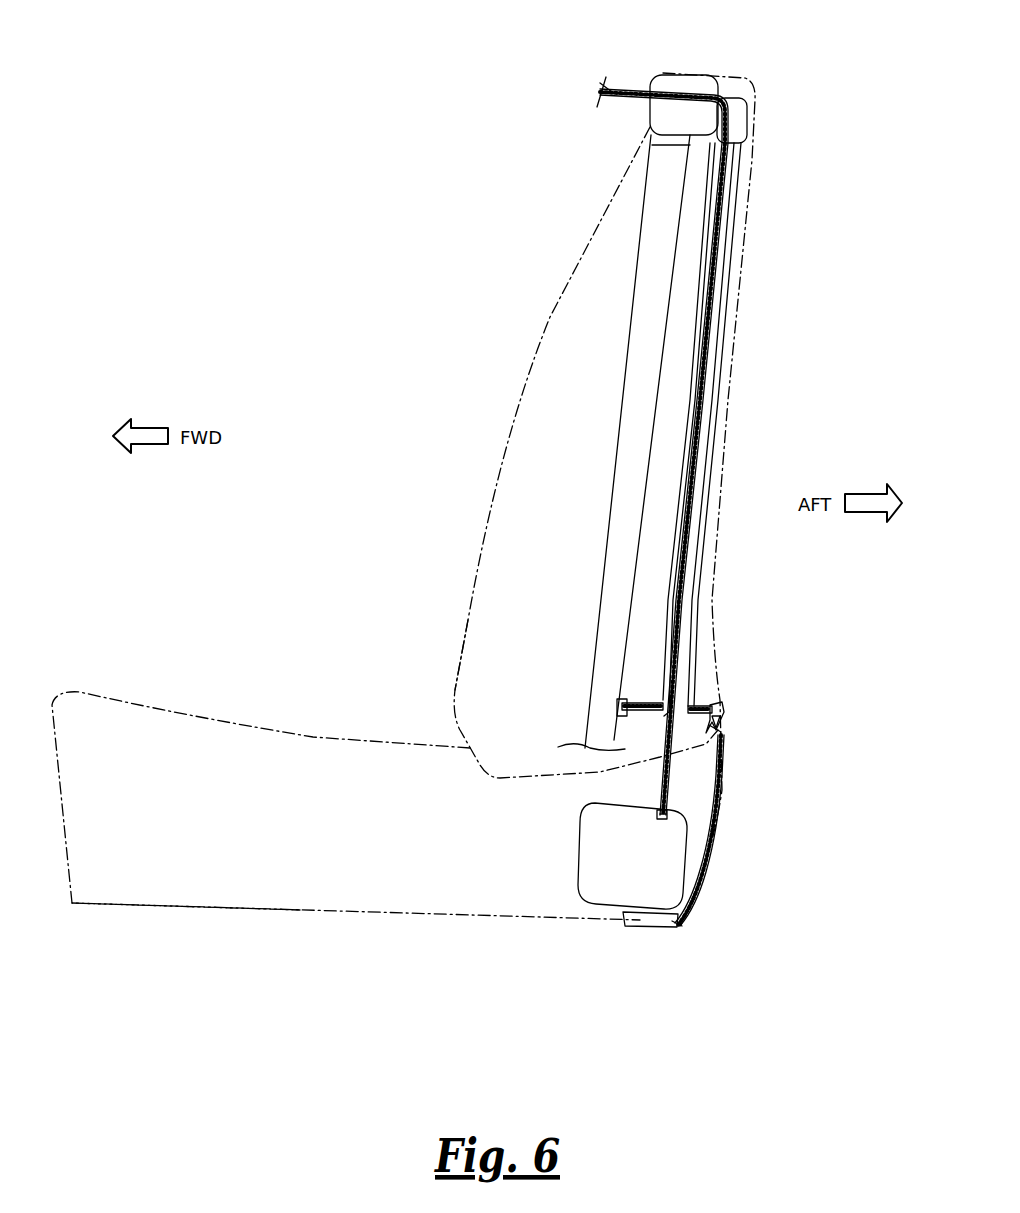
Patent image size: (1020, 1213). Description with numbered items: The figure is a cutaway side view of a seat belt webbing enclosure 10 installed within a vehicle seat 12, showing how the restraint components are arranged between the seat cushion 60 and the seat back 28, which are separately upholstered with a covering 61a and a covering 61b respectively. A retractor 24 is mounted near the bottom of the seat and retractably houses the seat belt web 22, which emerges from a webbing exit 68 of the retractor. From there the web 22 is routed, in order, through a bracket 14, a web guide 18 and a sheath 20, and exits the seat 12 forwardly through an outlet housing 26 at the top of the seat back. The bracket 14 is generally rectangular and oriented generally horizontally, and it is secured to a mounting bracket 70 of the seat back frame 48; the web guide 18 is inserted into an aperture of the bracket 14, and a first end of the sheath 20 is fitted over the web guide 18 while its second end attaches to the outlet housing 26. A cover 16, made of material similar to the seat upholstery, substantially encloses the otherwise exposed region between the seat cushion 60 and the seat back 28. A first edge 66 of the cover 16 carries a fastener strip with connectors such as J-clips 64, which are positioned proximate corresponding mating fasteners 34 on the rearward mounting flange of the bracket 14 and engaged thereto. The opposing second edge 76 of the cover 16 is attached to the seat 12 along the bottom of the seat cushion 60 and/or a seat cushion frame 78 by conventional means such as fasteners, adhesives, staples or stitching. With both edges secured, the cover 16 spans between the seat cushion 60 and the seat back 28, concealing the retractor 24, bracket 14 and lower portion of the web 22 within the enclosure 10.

The seat belt enclosure 10 is at (391, 237).
The vehicle seat 12 is at (378, 603).
The bracket 14 is at (640, 700).
The cover 16 is at (702, 868).
The web guide 18 is at (688, 698).
The sheath 20 is at (693, 627).
The seat belt web 22 is at (660, 802).
The retractor 24 is at (578, 866).
The outlet housing 26 is at (652, 85).
The seat back 28 is at (612, 194).
The fasteners 34 is at (713, 725).
The J-clips 64 is at (715, 728).
The seat back frame 48 is at (640, 292).
The seat cushion 60 is at (310, 735).
The covering 61a is at (167, 905).
The covering 61b is at (455, 688).
The first edge 66 is at (718, 708).
The webbing exit 68 is at (662, 814).
The mounting bracket 70 is at (622, 732).
The second edge 76 is at (677, 927).
The seat cushion frame 78 is at (652, 927).